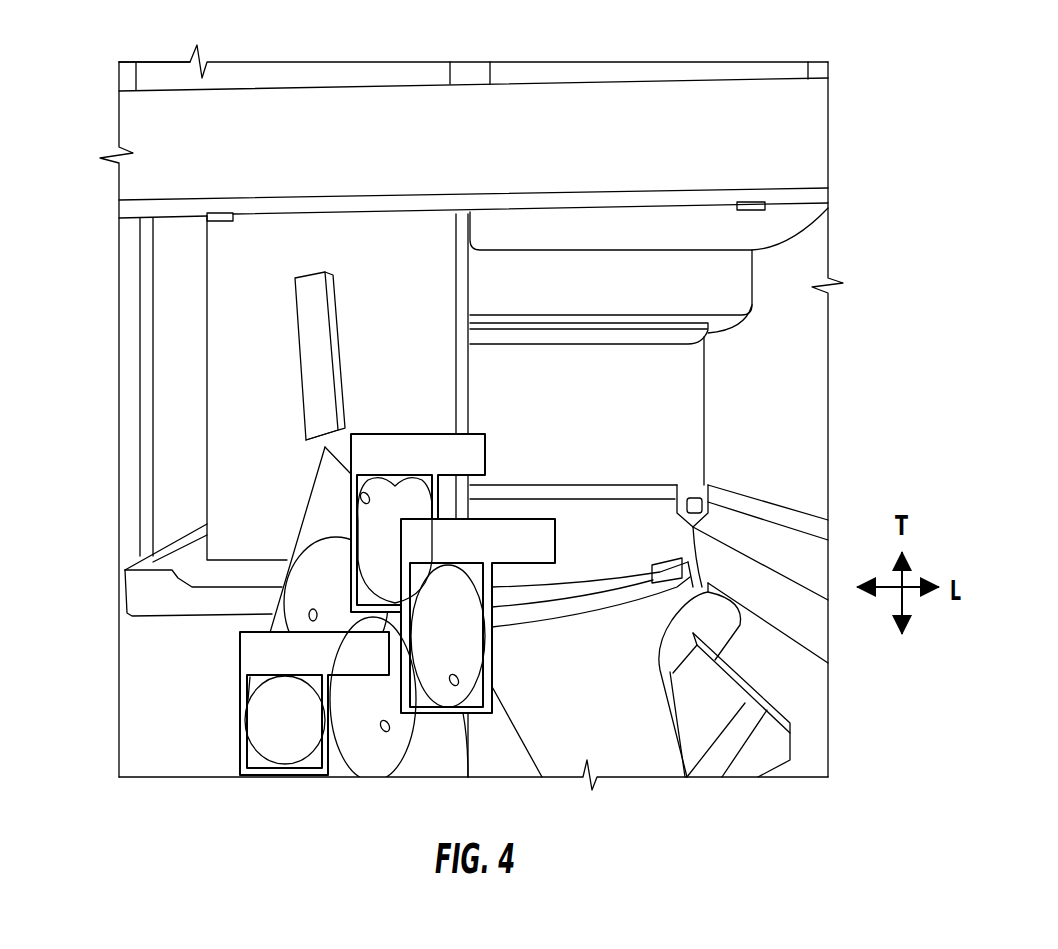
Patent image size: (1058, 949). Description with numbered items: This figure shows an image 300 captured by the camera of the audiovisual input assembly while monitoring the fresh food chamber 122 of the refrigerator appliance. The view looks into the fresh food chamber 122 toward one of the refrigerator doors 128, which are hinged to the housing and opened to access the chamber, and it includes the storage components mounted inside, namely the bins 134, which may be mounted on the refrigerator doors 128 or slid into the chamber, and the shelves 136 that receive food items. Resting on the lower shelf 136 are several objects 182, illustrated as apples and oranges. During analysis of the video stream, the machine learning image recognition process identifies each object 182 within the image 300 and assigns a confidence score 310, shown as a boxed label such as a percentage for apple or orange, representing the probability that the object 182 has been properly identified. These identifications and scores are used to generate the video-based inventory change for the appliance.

The fresh food chamber 122 is at (800, 349).
The refrigerator doors 128 is at (805, 700).
The bins 134 is at (186, 364).
The shelves 136 is at (178, 73).
The objects 182 is at (397, 631).
The image 300 is at (820, 403).
The confidence score 310 is at (486, 455).